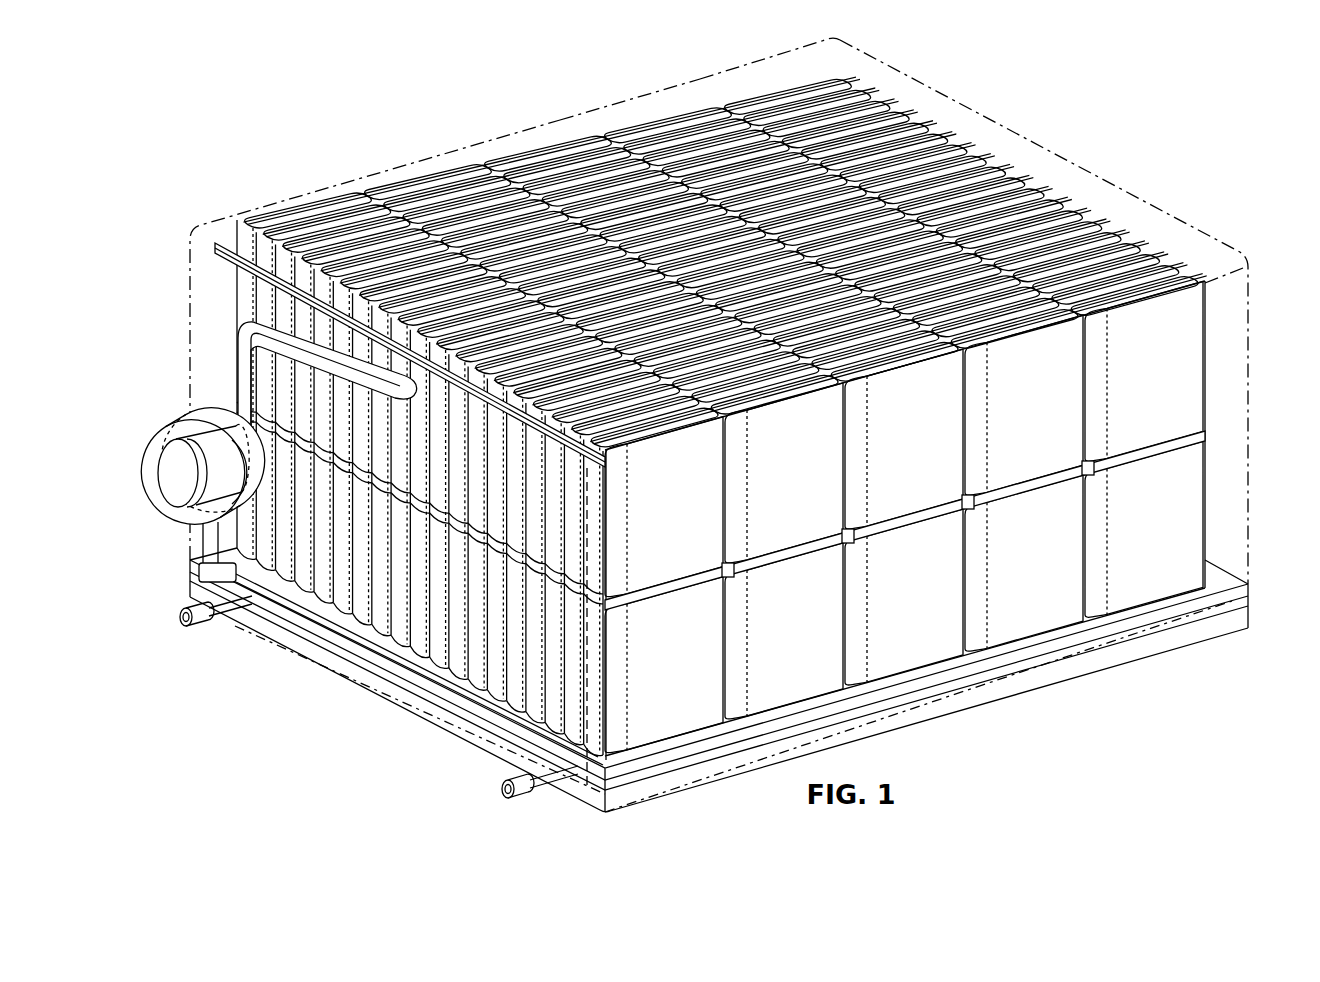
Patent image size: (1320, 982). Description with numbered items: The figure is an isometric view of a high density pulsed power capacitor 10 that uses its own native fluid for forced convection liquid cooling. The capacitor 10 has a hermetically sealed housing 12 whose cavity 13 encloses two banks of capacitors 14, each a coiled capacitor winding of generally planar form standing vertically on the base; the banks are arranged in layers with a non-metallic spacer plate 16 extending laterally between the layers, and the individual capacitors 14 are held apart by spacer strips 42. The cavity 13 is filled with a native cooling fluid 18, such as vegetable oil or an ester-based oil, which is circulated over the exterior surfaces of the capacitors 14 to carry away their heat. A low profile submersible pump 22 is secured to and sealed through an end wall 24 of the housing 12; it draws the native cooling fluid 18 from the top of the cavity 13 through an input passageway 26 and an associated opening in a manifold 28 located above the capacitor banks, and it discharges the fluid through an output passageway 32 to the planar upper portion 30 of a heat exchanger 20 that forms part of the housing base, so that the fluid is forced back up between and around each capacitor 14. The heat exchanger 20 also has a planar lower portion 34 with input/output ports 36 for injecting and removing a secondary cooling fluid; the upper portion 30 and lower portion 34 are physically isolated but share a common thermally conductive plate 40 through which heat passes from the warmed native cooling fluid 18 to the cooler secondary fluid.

The high density pulsed power capacitor 10 is at (335, 97).
The housing 12 is at (1107, 183).
The cavity 13 is at (697, 90).
The capacitor 14 is at (1185, 334).
The spacer plate 16 is at (1020, 494).
The native cooling fluid 18 is at (557, 131).
The heat exchanger 20 is at (933, 711).
The submersible pump 22 is at (170, 470).
The end wall 24 is at (200, 270).
The input passageway 26 is at (236, 372).
The manifold 28 is at (230, 242).
The planar upper portion 30 is at (336, 646).
The output passageway 32 is at (205, 552).
The planar lower portion 34 is at (382, 672).
The input/output ports 36 is at (180, 618).
The thermally conductive plate 40 is at (446, 705).
The spacer strips 42 is at (1000, 168).